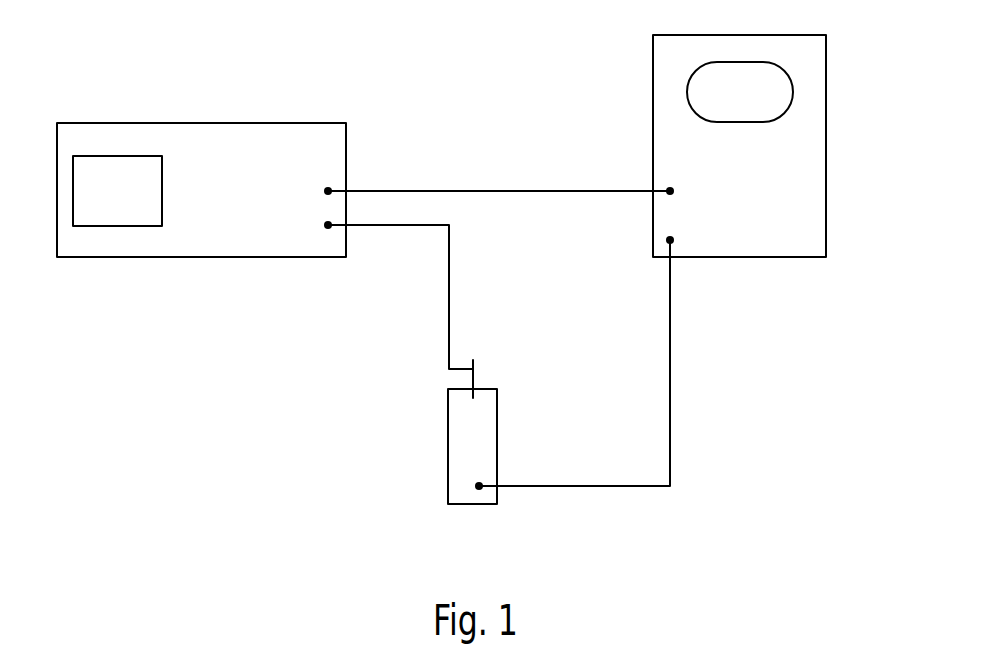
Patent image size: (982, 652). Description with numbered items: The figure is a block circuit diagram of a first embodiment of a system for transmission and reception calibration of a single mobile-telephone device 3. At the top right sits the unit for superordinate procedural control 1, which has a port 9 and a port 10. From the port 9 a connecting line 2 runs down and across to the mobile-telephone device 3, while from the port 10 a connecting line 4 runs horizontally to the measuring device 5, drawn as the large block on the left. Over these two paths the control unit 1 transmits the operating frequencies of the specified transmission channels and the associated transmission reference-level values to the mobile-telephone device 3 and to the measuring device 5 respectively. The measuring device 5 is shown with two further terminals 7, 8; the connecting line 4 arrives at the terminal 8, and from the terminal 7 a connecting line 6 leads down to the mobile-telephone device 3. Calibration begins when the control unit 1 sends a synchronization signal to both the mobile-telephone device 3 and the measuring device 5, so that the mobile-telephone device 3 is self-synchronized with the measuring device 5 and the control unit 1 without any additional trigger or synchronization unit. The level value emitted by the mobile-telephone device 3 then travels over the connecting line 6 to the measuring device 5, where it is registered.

The unit for superordinate procedural control 1 is at (826, 155).
The connecting line 2 is at (672, 338).
The mobile-telephone device 3 is at (482, 438).
The connecting line 4 is at (538, 188).
The measuring device 5 is at (278, 122).
The connecting line 6 is at (449, 267).
The terminal 7 is at (317, 225).
The terminal 8 is at (317, 190).
The port 9 is at (680, 240).
The port 10 is at (687, 190).